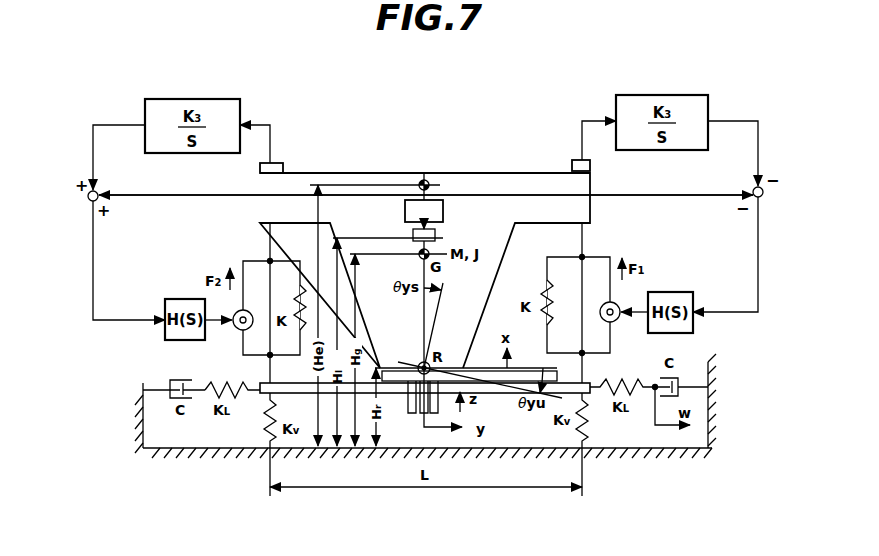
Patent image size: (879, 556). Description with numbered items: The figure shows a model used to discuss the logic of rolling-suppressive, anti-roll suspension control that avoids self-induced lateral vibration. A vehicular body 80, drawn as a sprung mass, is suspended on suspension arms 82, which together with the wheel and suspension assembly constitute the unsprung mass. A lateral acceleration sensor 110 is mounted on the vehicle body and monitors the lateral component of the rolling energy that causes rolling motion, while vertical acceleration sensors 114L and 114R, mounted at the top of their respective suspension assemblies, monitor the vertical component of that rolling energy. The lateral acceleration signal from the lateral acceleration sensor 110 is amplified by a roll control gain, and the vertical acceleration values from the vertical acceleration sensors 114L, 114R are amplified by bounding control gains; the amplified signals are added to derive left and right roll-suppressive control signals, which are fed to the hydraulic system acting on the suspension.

The vehicular body 80 is at (490, 172).
The suspension arms 82 is at (310, 395).
The lateral acceleration sensor 110 is at (414, 200).
The vertical acceleration sensor 114L is at (283, 164).
The vertical acceleration sensor 114R is at (578, 160).